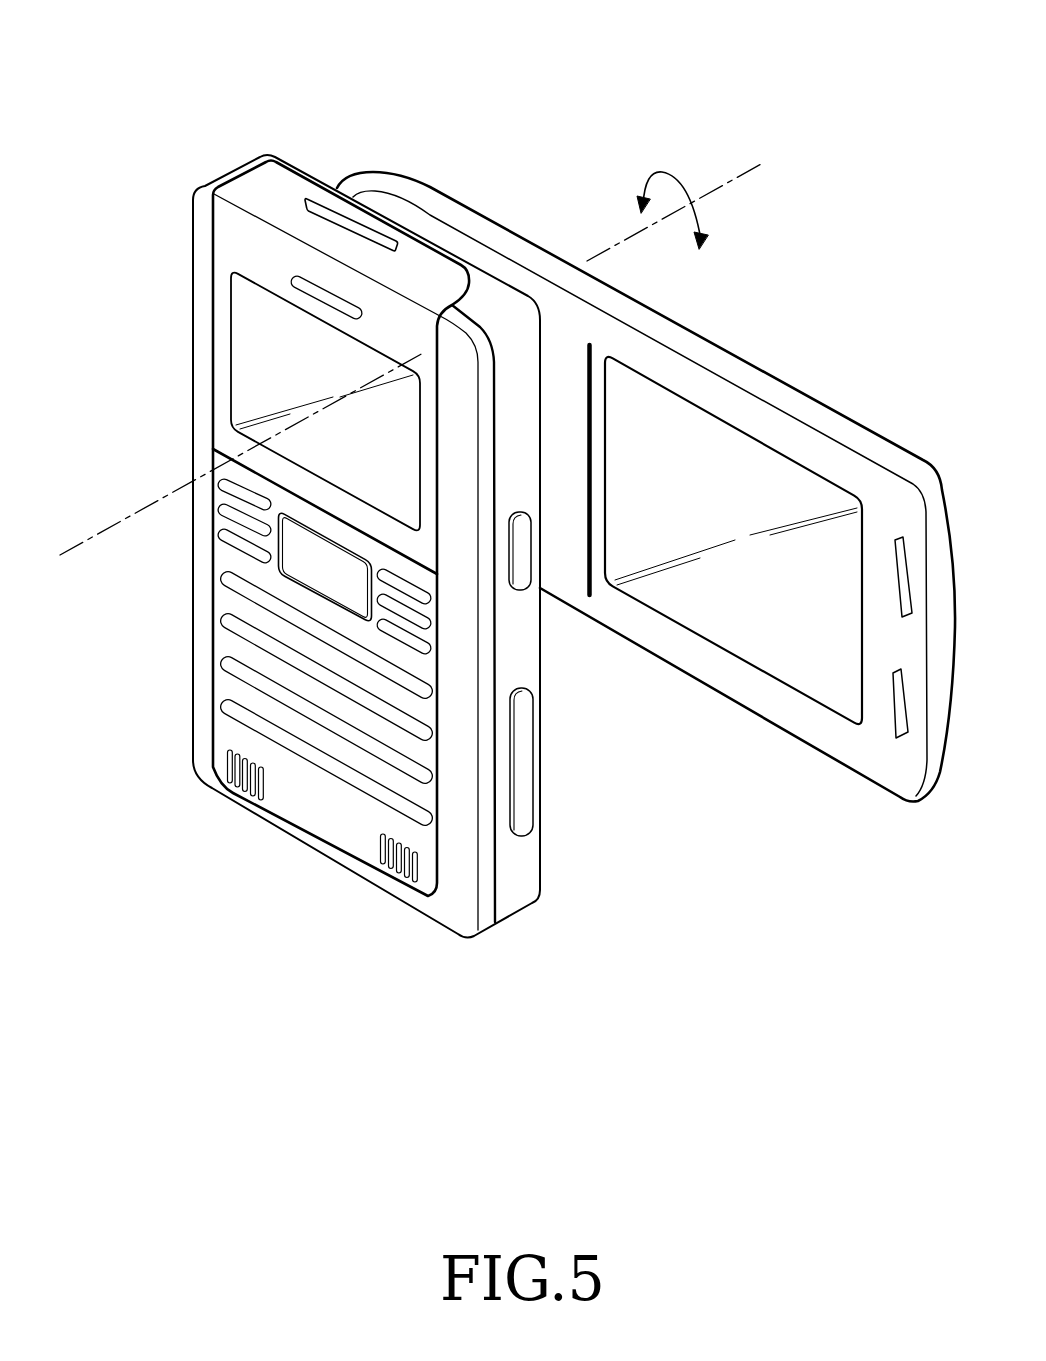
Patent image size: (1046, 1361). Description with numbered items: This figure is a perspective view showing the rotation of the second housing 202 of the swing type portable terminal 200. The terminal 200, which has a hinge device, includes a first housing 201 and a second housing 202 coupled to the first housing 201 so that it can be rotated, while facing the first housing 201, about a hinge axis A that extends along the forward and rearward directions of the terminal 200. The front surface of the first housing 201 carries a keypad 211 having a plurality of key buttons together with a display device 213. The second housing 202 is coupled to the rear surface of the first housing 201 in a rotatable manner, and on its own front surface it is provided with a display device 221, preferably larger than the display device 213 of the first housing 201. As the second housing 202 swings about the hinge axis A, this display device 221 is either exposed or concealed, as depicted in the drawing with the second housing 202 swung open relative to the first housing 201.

The swing type portable terminal 200 is at (199, 34).
The first housing 201 is at (292, 546).
The second housing 202 is at (646, 509).
The keypad 211 is at (230, 666).
The display device 213 is at (247, 373).
The display device 221 is at (760, 642).
The hinge axis A is at (745, 168).